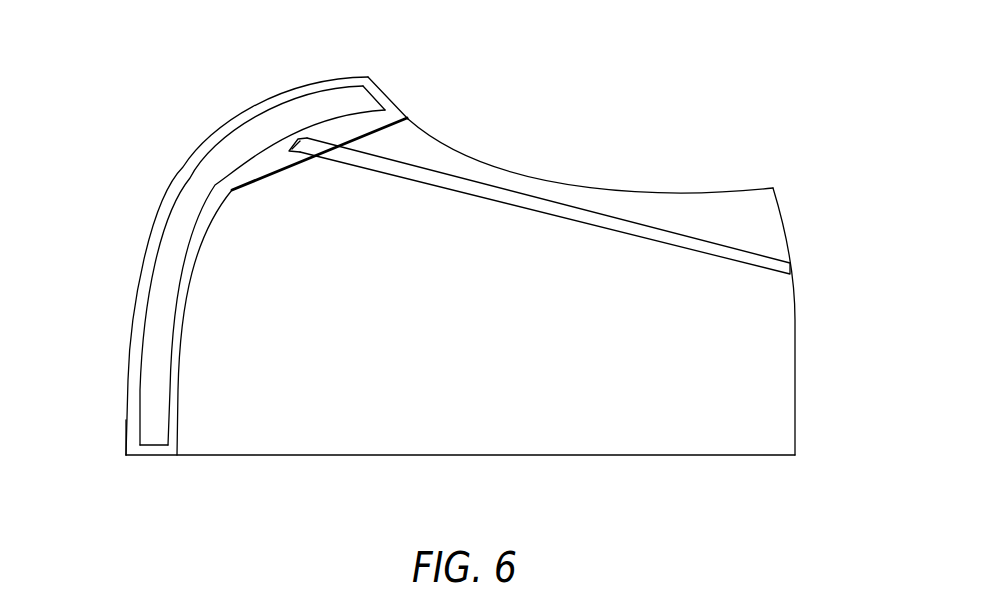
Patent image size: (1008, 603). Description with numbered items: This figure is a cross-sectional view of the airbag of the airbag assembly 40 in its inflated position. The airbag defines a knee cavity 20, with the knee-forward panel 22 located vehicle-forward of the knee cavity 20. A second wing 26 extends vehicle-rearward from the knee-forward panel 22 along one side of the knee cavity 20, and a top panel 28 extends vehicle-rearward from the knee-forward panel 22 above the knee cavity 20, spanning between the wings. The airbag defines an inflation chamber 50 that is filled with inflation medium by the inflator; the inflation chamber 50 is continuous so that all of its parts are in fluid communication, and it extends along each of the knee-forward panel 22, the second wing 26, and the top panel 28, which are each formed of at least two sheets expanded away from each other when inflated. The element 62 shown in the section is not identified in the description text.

The knee cavity 20 is at (498, 313).
The knee-forward panel 22 is at (128, 390).
The second wing 26 is at (763, 352).
The top panel 28 is at (317, 80).
The airbag assembly 40 is at (705, 186).
The inflation chamber 50 is at (230, 233).
The strap 62 is at (383, 127).